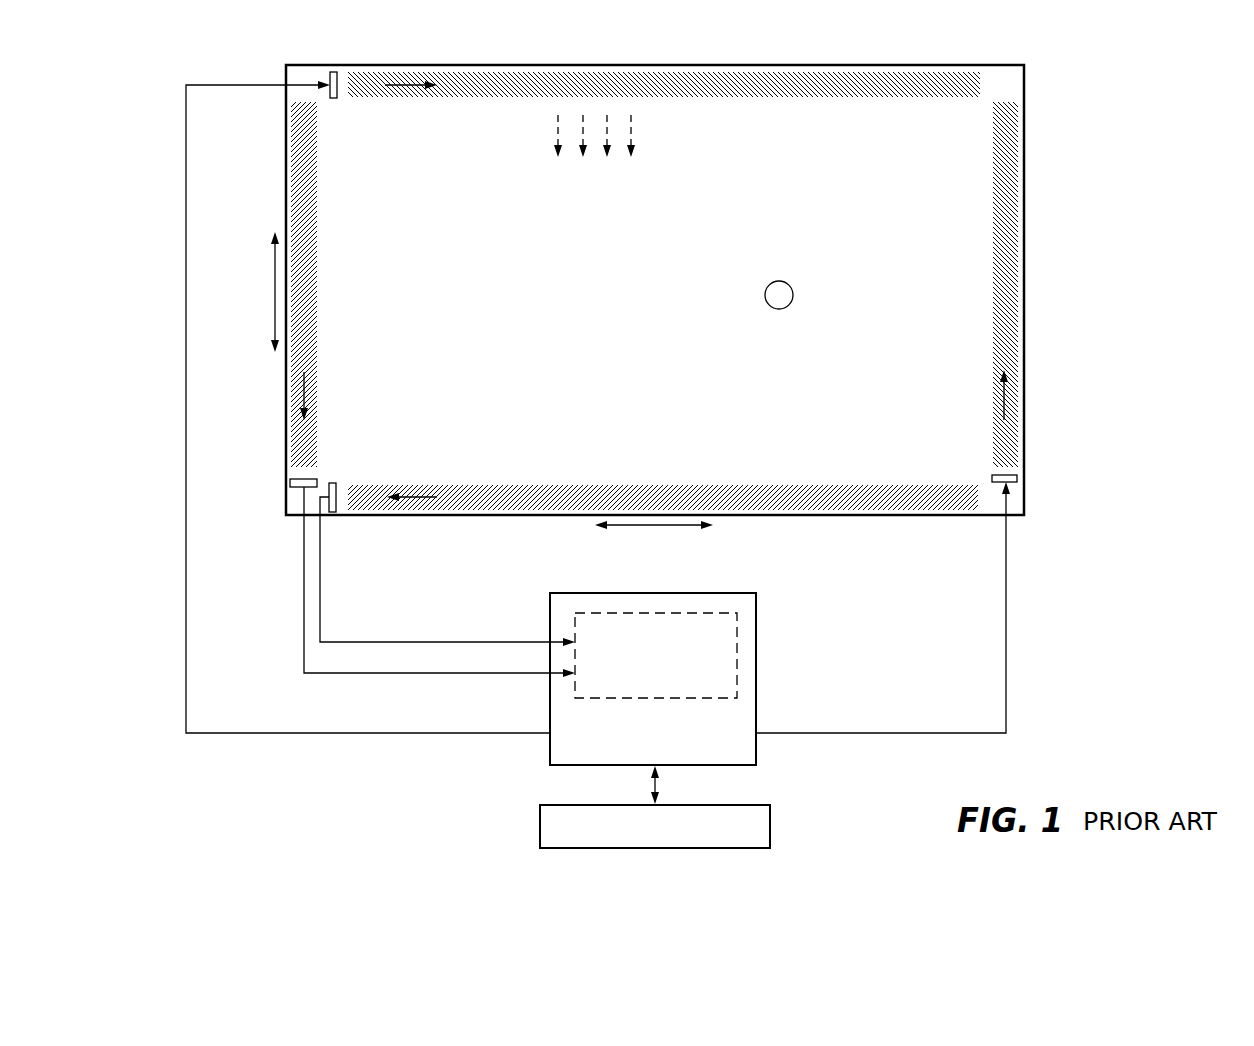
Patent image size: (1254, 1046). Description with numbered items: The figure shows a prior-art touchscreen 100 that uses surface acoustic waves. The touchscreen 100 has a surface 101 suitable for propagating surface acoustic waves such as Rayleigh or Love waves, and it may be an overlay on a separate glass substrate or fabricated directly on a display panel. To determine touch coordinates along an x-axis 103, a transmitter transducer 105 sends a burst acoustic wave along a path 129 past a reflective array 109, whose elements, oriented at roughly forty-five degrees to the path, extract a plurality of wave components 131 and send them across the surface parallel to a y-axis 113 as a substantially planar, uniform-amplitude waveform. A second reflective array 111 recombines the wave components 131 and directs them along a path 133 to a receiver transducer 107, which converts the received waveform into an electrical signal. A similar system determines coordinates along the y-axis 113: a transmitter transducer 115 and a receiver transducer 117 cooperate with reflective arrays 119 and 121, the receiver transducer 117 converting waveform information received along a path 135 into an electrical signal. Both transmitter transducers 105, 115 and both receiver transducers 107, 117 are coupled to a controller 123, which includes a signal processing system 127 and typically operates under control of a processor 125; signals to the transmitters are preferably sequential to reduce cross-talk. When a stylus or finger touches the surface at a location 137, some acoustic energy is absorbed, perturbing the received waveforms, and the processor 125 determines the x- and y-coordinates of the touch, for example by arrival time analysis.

The touchscreen 100 is at (716, 57).
The surface 101 is at (668, 305).
The x-axis 103 is at (683, 527).
The transmitter transducer 105 is at (334, 72).
The receiver transducer 107 is at (335, 511).
The reflective array 109 is at (816, 97).
The reflective array 111 is at (641, 485).
The y-axis 113 is at (274, 328).
The transmitter transducer 115 is at (1017, 478).
The receiver transducer 117 is at (290, 482).
The reflective array 119 is at (992, 283).
The reflective array 121 is at (318, 283).
The controller 123 is at (756, 677).
The processor 125 is at (771, 820).
The signal processing system 127 is at (740, 655).
The path 129 is at (418, 84).
The wave components 131 is at (556, 128).
The path 133 is at (420, 497).
The path 135 is at (306, 392).
The location 137 is at (785, 283).